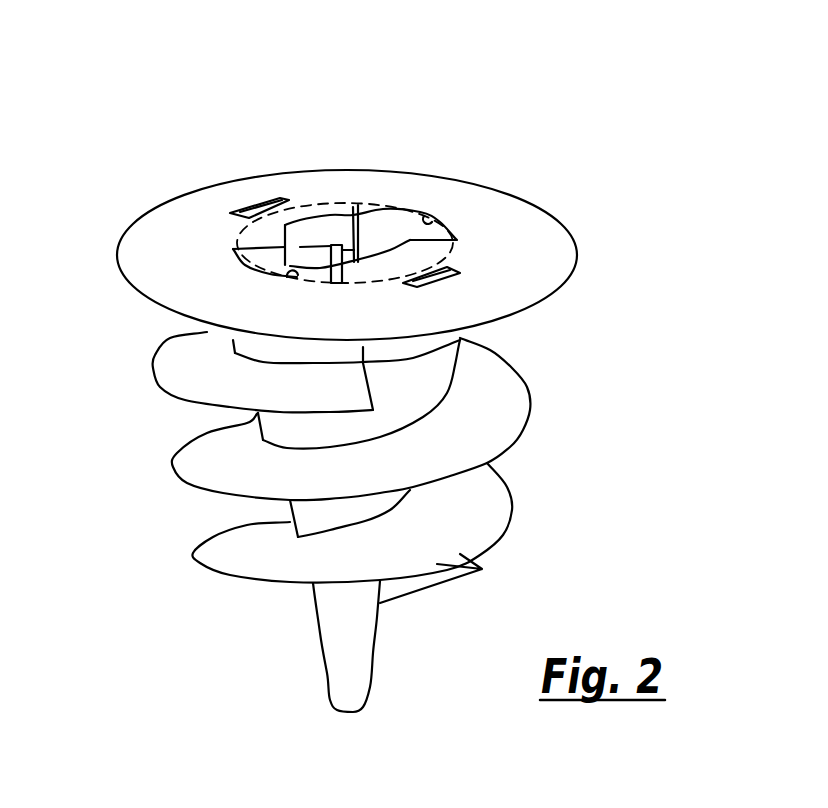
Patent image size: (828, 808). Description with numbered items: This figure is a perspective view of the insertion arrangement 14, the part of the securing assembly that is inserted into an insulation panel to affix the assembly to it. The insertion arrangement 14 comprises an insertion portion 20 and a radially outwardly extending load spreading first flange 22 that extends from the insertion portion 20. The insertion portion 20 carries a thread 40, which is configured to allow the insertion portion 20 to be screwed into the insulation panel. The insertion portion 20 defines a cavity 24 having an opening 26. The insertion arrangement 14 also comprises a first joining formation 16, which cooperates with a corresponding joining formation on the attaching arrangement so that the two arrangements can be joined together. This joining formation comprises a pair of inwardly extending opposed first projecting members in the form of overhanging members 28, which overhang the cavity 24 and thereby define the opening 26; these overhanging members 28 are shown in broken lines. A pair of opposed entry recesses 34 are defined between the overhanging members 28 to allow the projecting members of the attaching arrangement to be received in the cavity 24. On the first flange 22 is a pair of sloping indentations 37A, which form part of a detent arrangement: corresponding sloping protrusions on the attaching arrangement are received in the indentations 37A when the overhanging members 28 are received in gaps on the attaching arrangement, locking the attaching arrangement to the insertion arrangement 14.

The insertion arrangement 14 is at (399, 384).
The first joining formation 16 is at (318, 214).
The insertion portion 20 is at (343, 522).
The load spreading first flange 22 is at (530, 228).
The cavity 24 is at (350, 258).
The opening 26 is at (420, 225).
The overhanging members 28 is at (263, 237).
The entry recesses 34 is at (363, 211).
The sloping indentations 37A is at (257, 212).
The thread 40 is at (490, 433).